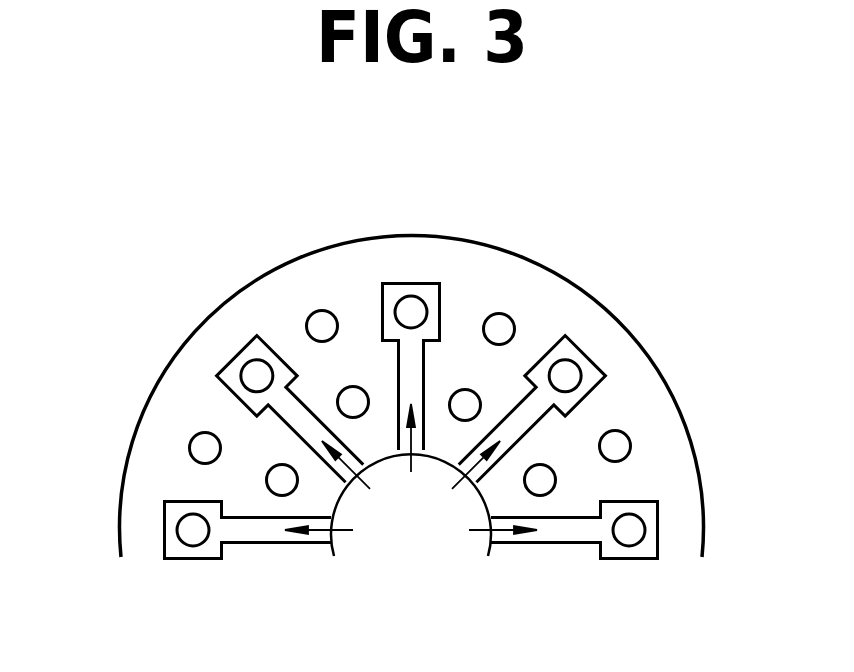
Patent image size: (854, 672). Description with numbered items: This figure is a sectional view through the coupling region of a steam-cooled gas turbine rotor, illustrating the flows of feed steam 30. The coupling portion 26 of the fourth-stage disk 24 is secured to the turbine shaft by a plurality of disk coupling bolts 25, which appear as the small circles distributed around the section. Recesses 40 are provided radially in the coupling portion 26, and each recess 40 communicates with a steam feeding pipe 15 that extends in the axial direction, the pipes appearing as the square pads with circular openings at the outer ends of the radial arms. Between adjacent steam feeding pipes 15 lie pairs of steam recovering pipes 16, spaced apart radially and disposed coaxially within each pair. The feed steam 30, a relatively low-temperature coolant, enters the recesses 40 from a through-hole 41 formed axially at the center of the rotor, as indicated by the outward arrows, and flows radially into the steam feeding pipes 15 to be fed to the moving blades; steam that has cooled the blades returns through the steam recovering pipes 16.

The fourth-stage disk 24 is at (375, 238).
The coupling portion 26 is at (417, 265).
The steam recovering pipes 16 is at (508, 317).
The disk coupling bolts 25 is at (266, 477).
The steam feeding pipes 15 is at (578, 367).
The recesses 40 is at (603, 367).
The feed steam 30 is at (347, 535).
The through-hole 41 is at (435, 538).